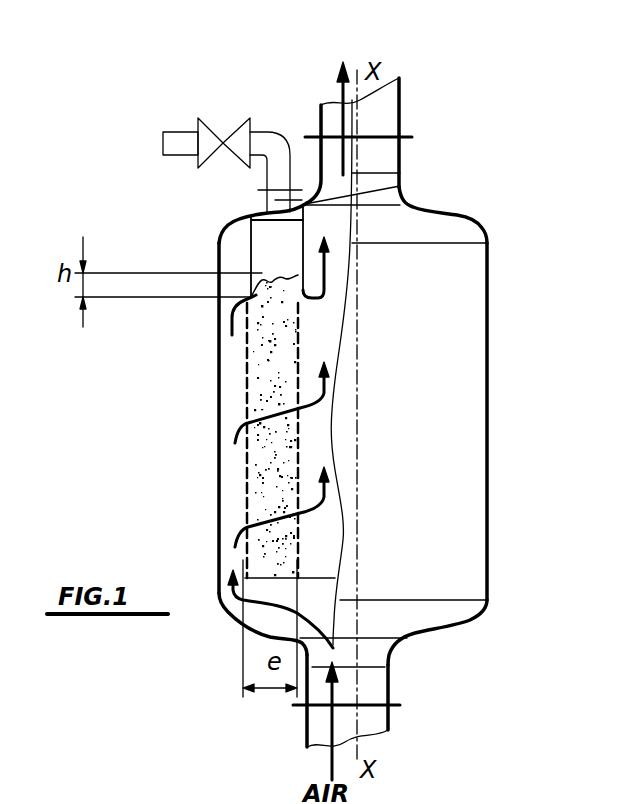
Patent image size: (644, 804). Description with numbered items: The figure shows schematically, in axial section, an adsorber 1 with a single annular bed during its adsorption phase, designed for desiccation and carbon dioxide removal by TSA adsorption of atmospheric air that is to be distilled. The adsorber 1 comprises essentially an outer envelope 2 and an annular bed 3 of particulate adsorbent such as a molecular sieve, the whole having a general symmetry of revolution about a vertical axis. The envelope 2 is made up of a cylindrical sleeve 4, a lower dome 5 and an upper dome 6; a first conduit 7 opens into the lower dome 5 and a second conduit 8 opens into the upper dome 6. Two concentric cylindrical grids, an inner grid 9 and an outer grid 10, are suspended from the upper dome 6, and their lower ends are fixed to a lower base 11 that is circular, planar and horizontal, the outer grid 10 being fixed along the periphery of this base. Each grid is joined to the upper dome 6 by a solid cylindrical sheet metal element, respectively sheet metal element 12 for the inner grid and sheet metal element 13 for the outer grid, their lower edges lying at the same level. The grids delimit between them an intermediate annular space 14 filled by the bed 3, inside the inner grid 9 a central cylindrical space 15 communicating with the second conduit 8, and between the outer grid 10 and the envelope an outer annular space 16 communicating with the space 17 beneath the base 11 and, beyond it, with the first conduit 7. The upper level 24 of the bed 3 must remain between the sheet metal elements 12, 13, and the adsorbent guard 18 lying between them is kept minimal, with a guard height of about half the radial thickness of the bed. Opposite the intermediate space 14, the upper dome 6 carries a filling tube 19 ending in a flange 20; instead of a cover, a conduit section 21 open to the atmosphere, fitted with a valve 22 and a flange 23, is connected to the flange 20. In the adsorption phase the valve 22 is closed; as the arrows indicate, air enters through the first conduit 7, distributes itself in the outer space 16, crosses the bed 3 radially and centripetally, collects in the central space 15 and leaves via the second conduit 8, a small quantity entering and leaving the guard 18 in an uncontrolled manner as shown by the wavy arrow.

The adsorber 1 is at (460, 133).
The outer envelope 2 is at (213, 352).
The annular bed 3 is at (262, 458).
The cylindrical sleeve 4 is at (488, 412).
The lower dome 5 is at (437, 630).
The upper dome 6 is at (457, 215).
The first conduit 7 is at (388, 692).
The second conduit 8 is at (400, 157).
The inner grid 9 is at (300, 337).
The outer grid 10 is at (253, 395).
The lower base 11 is at (317, 573).
The sheet metal element 12 is at (307, 224).
The sheet metal element 13 is at (250, 247).
The intermediate annular space 14 is at (263, 553).
The central cylindrical space 15 is at (320, 440).
The outer annular space 16 is at (235, 500).
The space beneath the base 17 is at (272, 618).
The adsorbent guard 18 is at (305, 285).
The filling tube 19 is at (400, 186).
The flange 20 is at (258, 192).
The conduit section 21 is at (180, 140).
The valve 22 is at (240, 140).
The flange 23 is at (295, 187).
The top of filter bed 24 is at (268, 258).